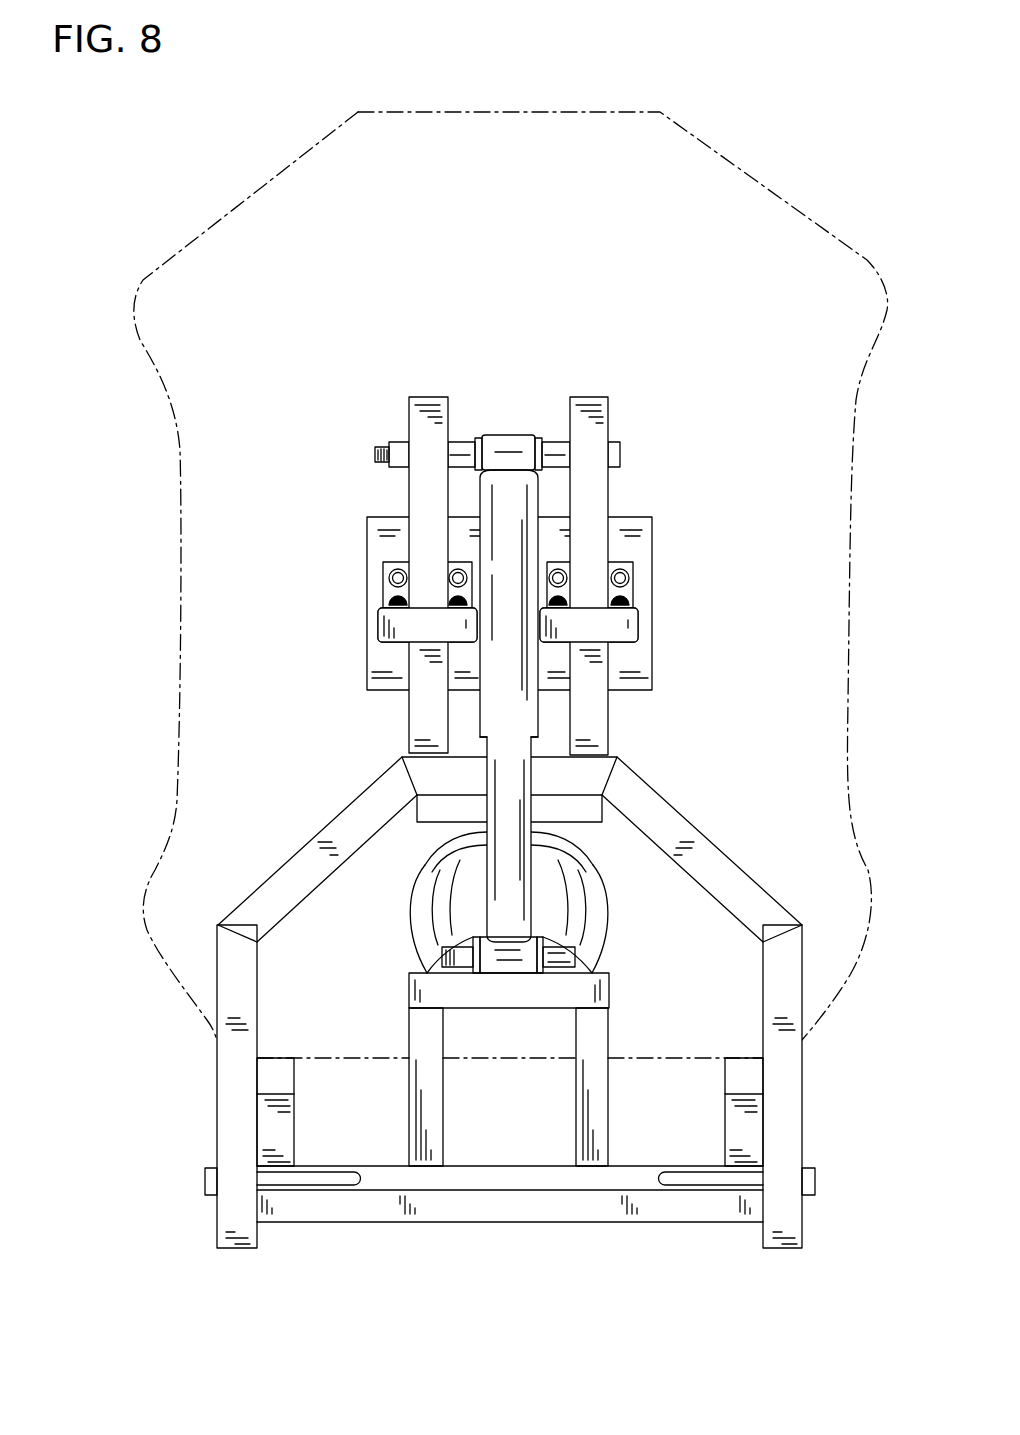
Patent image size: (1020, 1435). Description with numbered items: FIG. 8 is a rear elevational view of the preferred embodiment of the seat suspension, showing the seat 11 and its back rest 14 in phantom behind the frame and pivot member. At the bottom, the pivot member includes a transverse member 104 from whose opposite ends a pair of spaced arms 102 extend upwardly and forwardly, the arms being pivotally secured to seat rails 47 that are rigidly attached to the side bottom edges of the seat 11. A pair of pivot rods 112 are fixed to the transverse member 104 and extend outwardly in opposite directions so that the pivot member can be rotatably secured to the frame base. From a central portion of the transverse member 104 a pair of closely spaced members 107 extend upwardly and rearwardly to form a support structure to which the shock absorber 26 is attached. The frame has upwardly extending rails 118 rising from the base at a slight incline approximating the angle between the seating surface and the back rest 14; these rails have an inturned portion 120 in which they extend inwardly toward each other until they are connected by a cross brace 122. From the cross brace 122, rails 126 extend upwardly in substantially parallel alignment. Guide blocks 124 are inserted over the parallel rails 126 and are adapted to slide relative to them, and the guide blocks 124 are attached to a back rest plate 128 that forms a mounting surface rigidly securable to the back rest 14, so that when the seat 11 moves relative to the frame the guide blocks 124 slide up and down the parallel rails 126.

The seat 11 is at (700, 177).
The back rest 14 is at (200, 248).
The shock absorber 26 is at (513, 497).
The seat rails 47 is at (745, 1080).
The spaced arms 102 is at (272, 1128).
The transverse member 104 is at (459, 1173).
The closely spaced members 107 is at (587, 1117).
The pivot rods 112 is at (722, 1175).
The upwardly extending rails 118 is at (232, 1087).
The inturned portion 120 is at (298, 865).
The cross brace 122 is at (432, 774).
The guide blocks 124 is at (628, 628).
The rails 126 is at (426, 495).
The back rest plate 128 is at (633, 537).